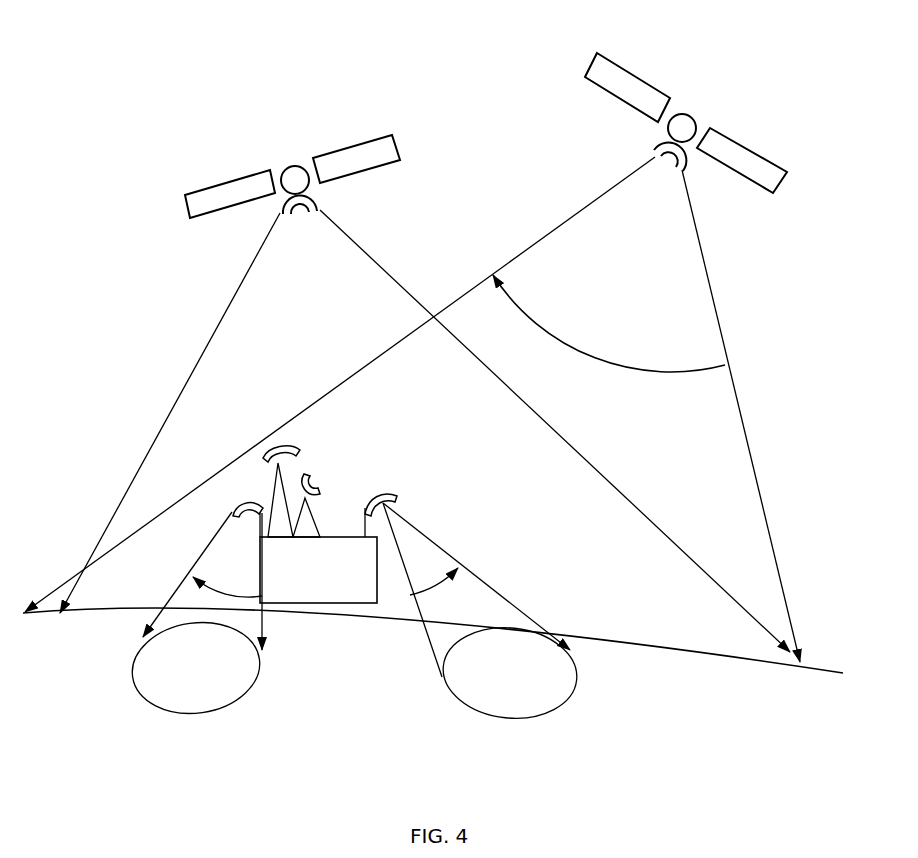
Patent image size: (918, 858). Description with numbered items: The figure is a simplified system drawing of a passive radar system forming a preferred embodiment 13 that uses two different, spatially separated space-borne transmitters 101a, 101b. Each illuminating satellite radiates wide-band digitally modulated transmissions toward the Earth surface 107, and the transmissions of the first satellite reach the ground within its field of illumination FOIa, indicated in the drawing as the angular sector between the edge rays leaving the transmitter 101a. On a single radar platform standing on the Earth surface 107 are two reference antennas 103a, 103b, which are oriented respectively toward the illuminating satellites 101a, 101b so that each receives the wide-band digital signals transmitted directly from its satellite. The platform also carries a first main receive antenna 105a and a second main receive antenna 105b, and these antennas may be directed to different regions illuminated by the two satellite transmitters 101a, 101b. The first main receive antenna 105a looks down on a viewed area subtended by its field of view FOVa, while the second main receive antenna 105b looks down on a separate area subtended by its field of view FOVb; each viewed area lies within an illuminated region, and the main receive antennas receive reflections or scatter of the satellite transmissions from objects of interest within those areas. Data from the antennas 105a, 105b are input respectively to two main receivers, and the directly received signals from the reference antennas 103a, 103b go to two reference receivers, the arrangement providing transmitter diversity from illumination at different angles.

The embodiment 13 is at (220, 103).
The space-borne transmitter 101a is at (693, 165).
The space-borne transmitter 101b is at (317, 208).
The reference antenna 103a is at (333, 460).
The reference antenna 103b is at (265, 491).
The first main receive antenna 105a is at (397, 502).
The second main receive antenna 105b is at (233, 510).
The Earth surface 107 is at (375, 623).
The field of illumination FOIa is at (581, 312).
The field of view FOVa is at (482, 614).
The field of view FOVb is at (195, 616).